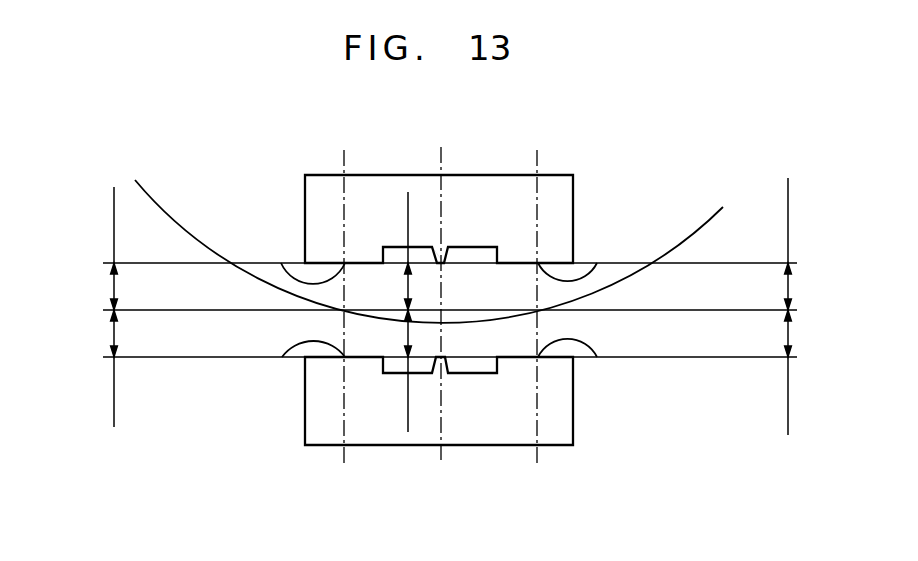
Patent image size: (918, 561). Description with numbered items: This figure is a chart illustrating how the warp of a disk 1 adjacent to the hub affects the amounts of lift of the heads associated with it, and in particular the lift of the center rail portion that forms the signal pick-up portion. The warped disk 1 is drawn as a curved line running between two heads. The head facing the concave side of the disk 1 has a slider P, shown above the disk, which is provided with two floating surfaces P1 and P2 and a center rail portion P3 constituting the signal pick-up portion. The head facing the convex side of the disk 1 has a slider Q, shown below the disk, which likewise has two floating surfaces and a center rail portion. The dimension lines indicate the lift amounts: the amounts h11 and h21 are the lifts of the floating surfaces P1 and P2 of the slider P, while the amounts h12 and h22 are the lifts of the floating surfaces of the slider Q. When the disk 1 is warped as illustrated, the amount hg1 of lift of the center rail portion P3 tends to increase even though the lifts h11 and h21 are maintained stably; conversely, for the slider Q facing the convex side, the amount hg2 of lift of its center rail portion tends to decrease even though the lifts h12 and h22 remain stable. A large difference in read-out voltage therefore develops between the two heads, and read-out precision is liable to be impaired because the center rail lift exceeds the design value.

The disk 1 is at (702, 228).
The slider P is at (485, 175).
The slider Q is at (483, 446).
The floating surface P1 is at (597, 263).
The floating surface P2 is at (281, 263).
The center rail portion P3 is at (445, 263).
The amount of lift of floating surface P1 h11 is at (773, 244).
The amount of lift of floating surface Q1 h12 is at (773, 372).
The amount of lift of floating surface P2 h21 is at (98, 248).
The amount of lift of floating surface Q2 h22 is at (98, 368).
The amount of lift of center rail portion P3 hg1 is at (393, 251).
The amount of lift of center rail portion Q3 hg2 is at (393, 371).